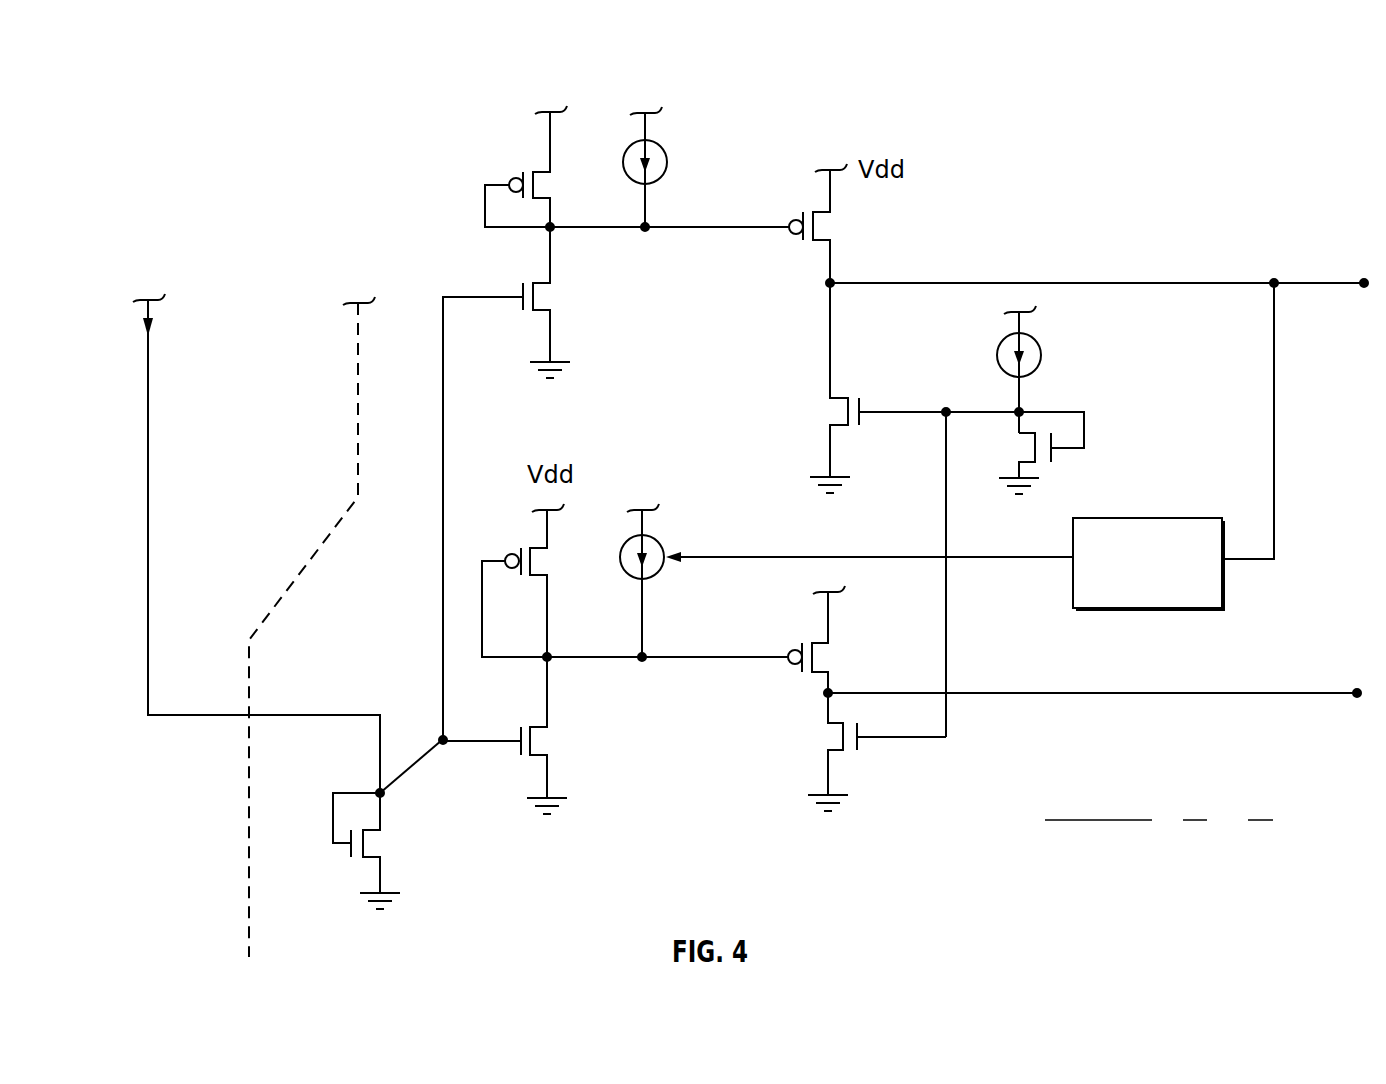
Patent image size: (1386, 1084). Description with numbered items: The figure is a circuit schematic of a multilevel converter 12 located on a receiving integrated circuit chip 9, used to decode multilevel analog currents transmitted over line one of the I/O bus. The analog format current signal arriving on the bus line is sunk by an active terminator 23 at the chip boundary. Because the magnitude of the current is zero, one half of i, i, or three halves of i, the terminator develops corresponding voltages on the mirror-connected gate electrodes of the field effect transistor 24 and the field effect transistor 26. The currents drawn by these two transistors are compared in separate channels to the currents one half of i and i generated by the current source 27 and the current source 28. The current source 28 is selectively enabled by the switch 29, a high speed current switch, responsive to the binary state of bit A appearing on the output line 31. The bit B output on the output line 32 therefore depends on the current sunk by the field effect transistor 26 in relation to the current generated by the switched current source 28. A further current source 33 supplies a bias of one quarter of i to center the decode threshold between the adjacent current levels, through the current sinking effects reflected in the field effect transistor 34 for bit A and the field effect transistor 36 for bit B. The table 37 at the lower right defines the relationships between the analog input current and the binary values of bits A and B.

The receiving integrated circuit chip 9 is at (248, 838).
The multilevel converter 12 is at (258, 222).
The active terminator 23 is at (412, 833).
The field effect transistor 24 is at (555, 298).
The field effect transistor 26 is at (553, 743).
The current source 27 is at (665, 165).
The current source 28 is at (662, 545).
The switch 29 is at (1122, 608).
The output line 31 is at (1336, 281).
The output line 32 is at (1303, 692).
The current source 33 is at (1041, 362).
The field effect transistor 34 is at (825, 415).
The field effect transistor 36 is at (822, 737).
The table 37 is at (1032, 735).